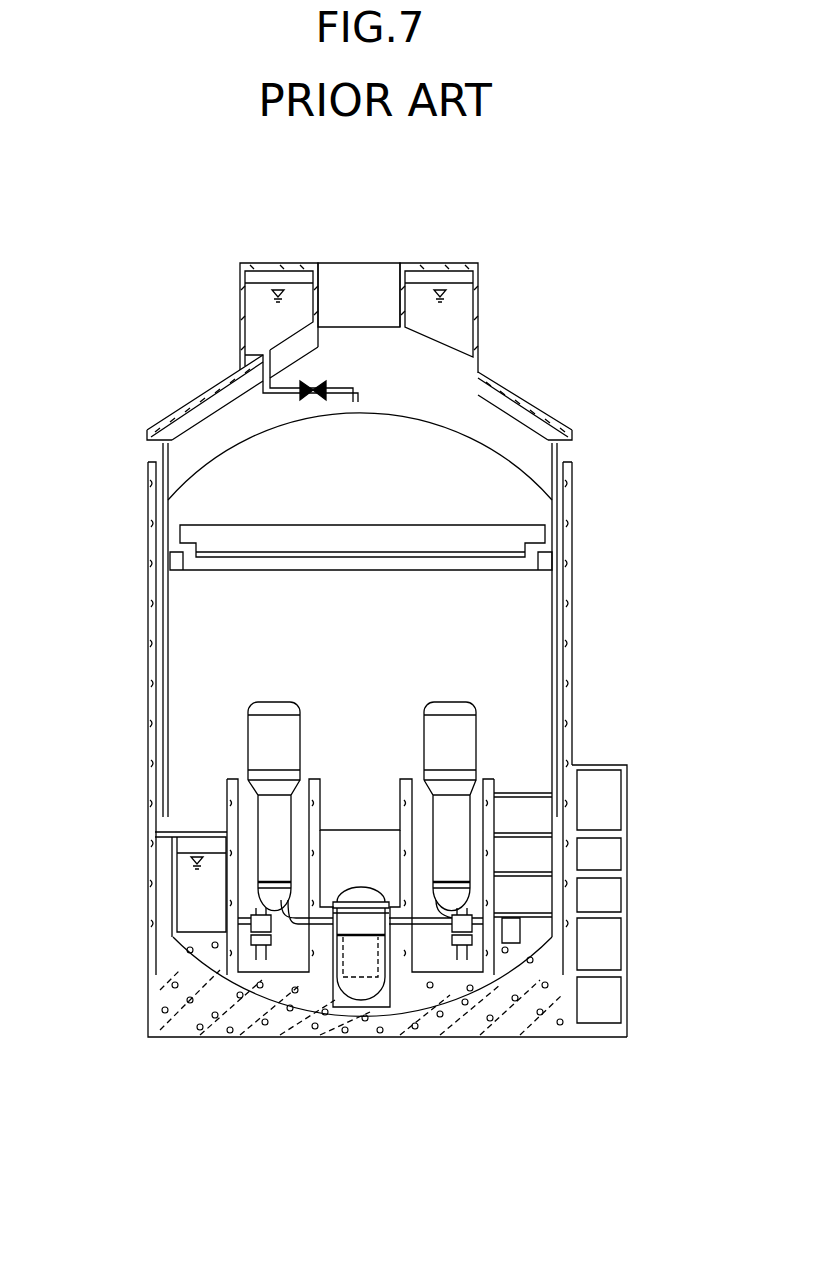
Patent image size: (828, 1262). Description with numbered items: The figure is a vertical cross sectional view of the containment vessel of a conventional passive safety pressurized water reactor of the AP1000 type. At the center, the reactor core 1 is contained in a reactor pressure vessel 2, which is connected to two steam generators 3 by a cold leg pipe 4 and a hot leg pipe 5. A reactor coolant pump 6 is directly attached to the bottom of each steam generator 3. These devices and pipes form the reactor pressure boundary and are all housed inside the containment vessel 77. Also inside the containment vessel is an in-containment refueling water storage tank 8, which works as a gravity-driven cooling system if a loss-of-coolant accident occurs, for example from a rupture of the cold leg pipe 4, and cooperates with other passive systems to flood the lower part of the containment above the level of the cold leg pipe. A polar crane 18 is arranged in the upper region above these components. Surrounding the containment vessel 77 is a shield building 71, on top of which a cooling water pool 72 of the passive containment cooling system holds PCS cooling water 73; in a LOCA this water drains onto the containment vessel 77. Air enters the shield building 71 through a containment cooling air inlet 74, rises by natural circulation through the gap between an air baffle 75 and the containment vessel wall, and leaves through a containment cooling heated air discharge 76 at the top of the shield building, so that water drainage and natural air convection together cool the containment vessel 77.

The reactor core 1 is at (370, 975).
The reactor pressure vessel 2 is at (358, 990).
The steam generator 3 is at (270, 706).
The cold leg pipe 4 is at (430, 923).
The hot leg pipe 5 is at (307, 923).
The reactor coolant pump 6 is at (258, 960).
The in-containment refueling water storage tank 8 is at (192, 898).
The polar crane 18 is at (462, 520).
The shield building 71 is at (150, 492).
The cooling water pool 72 is at (242, 293).
The PCS cooling water 73 is at (250, 338).
The containment cooling air inlet 74 is at (148, 453).
The air baffle 75 is at (163, 628).
The containment cooling heated air discharge 76 is at (363, 283).
The containment vessel 77 is at (568, 684).